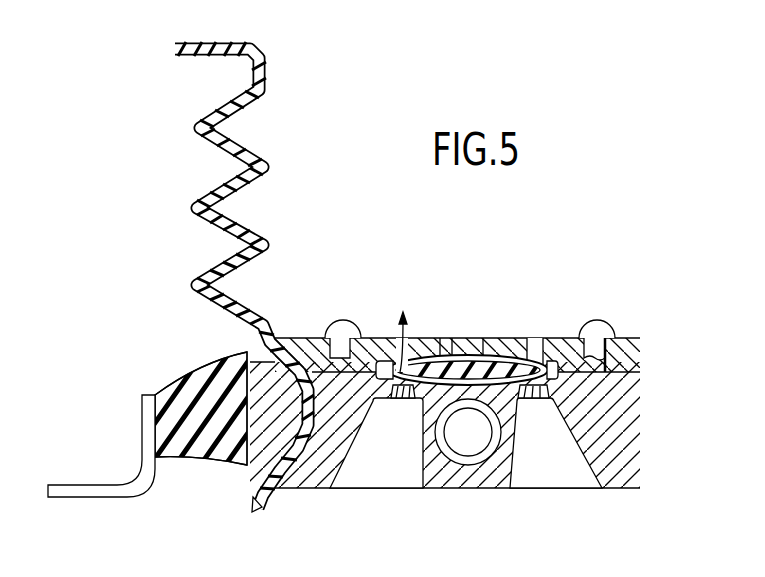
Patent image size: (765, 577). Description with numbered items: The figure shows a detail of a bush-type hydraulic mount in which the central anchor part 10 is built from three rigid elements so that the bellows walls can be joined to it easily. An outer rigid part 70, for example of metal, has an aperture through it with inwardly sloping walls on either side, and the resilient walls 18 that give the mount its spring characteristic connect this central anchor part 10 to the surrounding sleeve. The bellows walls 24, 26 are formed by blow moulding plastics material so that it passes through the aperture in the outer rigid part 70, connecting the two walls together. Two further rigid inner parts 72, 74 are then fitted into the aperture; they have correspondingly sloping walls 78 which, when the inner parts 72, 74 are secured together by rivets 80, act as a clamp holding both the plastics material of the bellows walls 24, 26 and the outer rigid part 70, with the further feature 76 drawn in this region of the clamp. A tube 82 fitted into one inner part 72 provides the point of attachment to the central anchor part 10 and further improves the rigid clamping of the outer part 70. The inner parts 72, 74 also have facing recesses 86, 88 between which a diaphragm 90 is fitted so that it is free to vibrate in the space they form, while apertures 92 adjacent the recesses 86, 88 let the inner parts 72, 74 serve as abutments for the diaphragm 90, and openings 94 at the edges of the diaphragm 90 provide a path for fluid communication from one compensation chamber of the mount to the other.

The central anchor part 10 is at (508, 498).
The resilient walls 18 is at (177, 440).
The bellows wall 24 is at (253, 497).
The bellows wall 26 is at (253, 157).
The outer rigid part 70 is at (262, 354).
The inner part 72 is at (317, 453).
The inner part 74 is at (445, 336).
The groove 76 is at (290, 347).
The sloping walls 78 is at (343, 330).
The rivets 80 is at (375, 340).
The tube 82 is at (457, 448).
The recess 86 is at (533, 397).
The recess 88 is at (462, 350).
The diaphragm 90 is at (548, 370).
The apertures 92 is at (403, 398).
The openings 94 is at (580, 357).